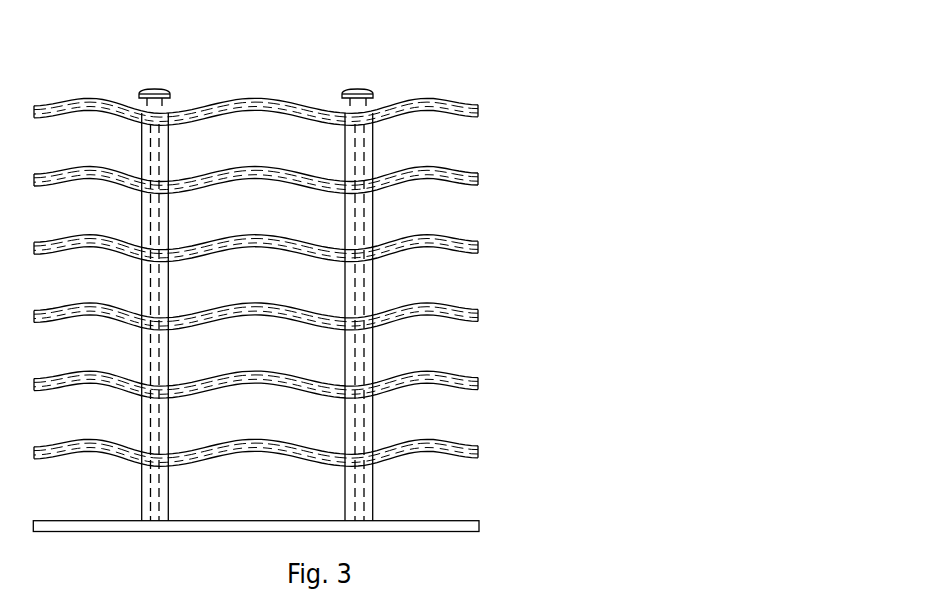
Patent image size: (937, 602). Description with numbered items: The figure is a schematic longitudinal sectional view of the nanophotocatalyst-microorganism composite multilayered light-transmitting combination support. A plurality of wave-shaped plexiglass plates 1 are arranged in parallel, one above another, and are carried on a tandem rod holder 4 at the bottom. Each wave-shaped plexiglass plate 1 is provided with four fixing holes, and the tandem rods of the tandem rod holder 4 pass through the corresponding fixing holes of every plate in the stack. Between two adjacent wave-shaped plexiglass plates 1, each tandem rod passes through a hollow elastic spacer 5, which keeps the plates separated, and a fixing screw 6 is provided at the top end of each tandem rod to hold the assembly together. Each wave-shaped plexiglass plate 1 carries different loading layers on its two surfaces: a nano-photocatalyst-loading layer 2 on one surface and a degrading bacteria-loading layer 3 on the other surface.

The wave-shaped plexiglass plate 1 is at (256, 65).
The nano-photocatalyst-loading layer 2 is at (240, 102).
The degrading bacteria-loading layer 3 is at (322, 122).
The tandem rod holder 4 is at (432, 527).
The hollow elastic spacer 5 is at (360, 168).
The fixing screw 6 is at (363, 93).